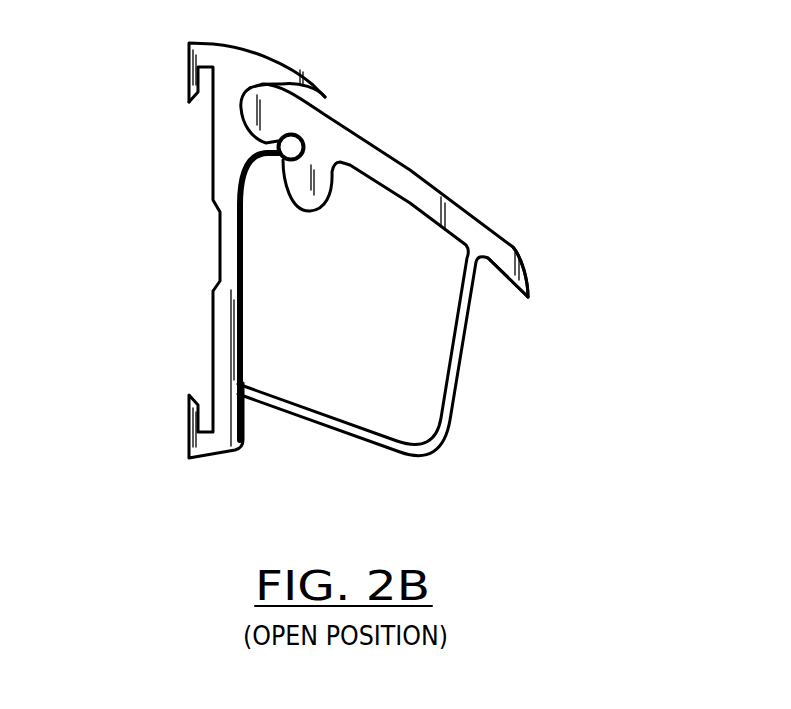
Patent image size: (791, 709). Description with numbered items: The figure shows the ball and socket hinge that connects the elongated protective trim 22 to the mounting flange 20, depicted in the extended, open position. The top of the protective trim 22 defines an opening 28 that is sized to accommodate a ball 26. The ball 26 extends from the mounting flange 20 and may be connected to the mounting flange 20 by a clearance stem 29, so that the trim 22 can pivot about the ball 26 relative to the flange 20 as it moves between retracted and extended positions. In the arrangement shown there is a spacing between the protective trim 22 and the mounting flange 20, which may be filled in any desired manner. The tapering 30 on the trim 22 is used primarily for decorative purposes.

The mounting flange 20 is at (225, 306).
The elongated trim 22 is at (437, 187).
The ball 26 is at (303, 141).
The opening 28 is at (282, 103).
The clearance stem 29 is at (268, 151).
The tapering 30 is at (530, 275).